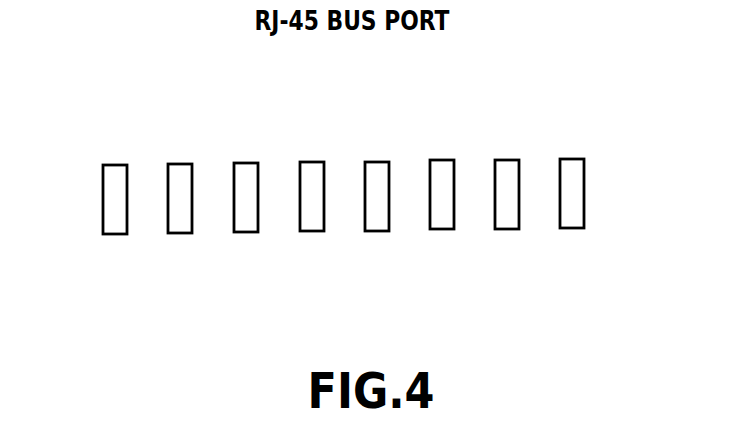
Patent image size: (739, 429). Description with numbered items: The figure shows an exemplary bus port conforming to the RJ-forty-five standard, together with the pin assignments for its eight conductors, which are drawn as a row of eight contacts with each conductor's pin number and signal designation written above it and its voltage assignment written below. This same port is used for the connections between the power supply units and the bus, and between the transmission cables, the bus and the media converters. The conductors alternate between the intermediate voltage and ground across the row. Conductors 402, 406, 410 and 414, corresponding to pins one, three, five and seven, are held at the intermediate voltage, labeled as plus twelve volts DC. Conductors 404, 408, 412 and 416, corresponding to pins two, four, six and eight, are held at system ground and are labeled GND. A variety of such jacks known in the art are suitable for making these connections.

The conductor 402 is at (103, 165).
The conductor 404 is at (168, 165).
The conductor 406 is at (234, 164).
The conductor 408 is at (300, 163).
The conductor 410 is at (389, 163).
The conductor 412 is at (454, 161).
The conductor 414 is at (519, 160).
The conductor 416 is at (584, 160).